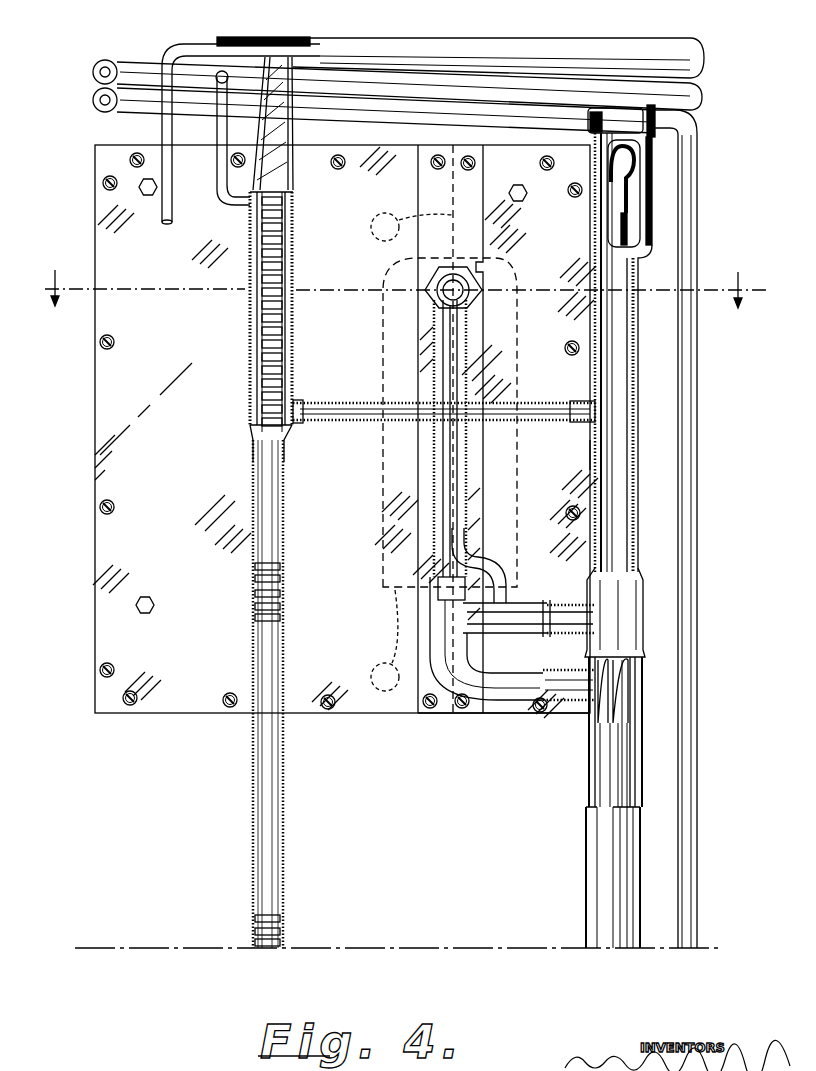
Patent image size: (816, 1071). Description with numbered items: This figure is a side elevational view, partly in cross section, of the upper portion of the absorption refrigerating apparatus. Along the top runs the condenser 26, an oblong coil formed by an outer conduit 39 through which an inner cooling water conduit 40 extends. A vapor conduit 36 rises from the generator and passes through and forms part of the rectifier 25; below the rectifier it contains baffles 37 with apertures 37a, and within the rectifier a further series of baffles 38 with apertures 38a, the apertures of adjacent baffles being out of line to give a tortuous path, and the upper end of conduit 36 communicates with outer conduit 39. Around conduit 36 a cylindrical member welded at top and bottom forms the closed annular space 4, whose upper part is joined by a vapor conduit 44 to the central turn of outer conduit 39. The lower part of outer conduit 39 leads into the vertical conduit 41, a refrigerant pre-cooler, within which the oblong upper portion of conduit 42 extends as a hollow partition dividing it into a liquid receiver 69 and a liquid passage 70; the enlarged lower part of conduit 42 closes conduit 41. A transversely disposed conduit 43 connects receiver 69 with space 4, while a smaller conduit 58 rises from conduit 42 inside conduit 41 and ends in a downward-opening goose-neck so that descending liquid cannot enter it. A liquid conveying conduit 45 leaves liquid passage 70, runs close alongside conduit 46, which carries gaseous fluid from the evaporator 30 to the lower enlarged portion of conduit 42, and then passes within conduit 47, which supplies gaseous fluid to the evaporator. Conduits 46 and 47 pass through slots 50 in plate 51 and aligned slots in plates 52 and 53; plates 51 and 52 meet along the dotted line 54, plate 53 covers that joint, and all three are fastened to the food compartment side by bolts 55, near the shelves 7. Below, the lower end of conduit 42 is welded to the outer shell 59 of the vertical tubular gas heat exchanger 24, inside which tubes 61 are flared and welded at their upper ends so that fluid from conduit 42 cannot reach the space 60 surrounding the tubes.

The space 4 is at (290, 298).
The shelves 7 is at (399, 289).
The gas heat exchanger 24 is at (607, 845).
The rectifier 25 is at (248, 330).
The condenser 26 is at (704, 62).
The evaporator 30 is at (385, 640).
The vapor conduit 36 is at (283, 852).
The baffles 37 is at (265, 625).
The apertures 37a is at (280, 578).
The baffles 38 is at (262, 452).
The apertures 38a is at (290, 360).
The outer conduit 39 is at (283, 42).
The inner cooling water conduit 40 is at (243, 45).
The conduit 41 is at (650, 210).
The conduit 42 is at (640, 413).
The transversely disposed conduit 43 is at (550, 422).
The vapor conduit 44 is at (218, 192).
The liquid conveying conduit 45 is at (490, 553).
The conduit 46 is at (553, 603).
The conduit 47 is at (470, 517).
The slots 50 is at (480, 643).
The plate 51 is at (168, 705).
The plate 52 is at (505, 710).
The plate 53 is at (423, 712).
The dotted line 54 is at (444, 400).
The bolts 55 is at (228, 712).
The conduit 58 is at (628, 190).
The outer shell 59 is at (643, 697).
The space 60 is at (613, 782).
The tubes 61 is at (623, 765).
The liquid receiver 69 is at (592, 453).
The liquid passage 70 is at (638, 350).